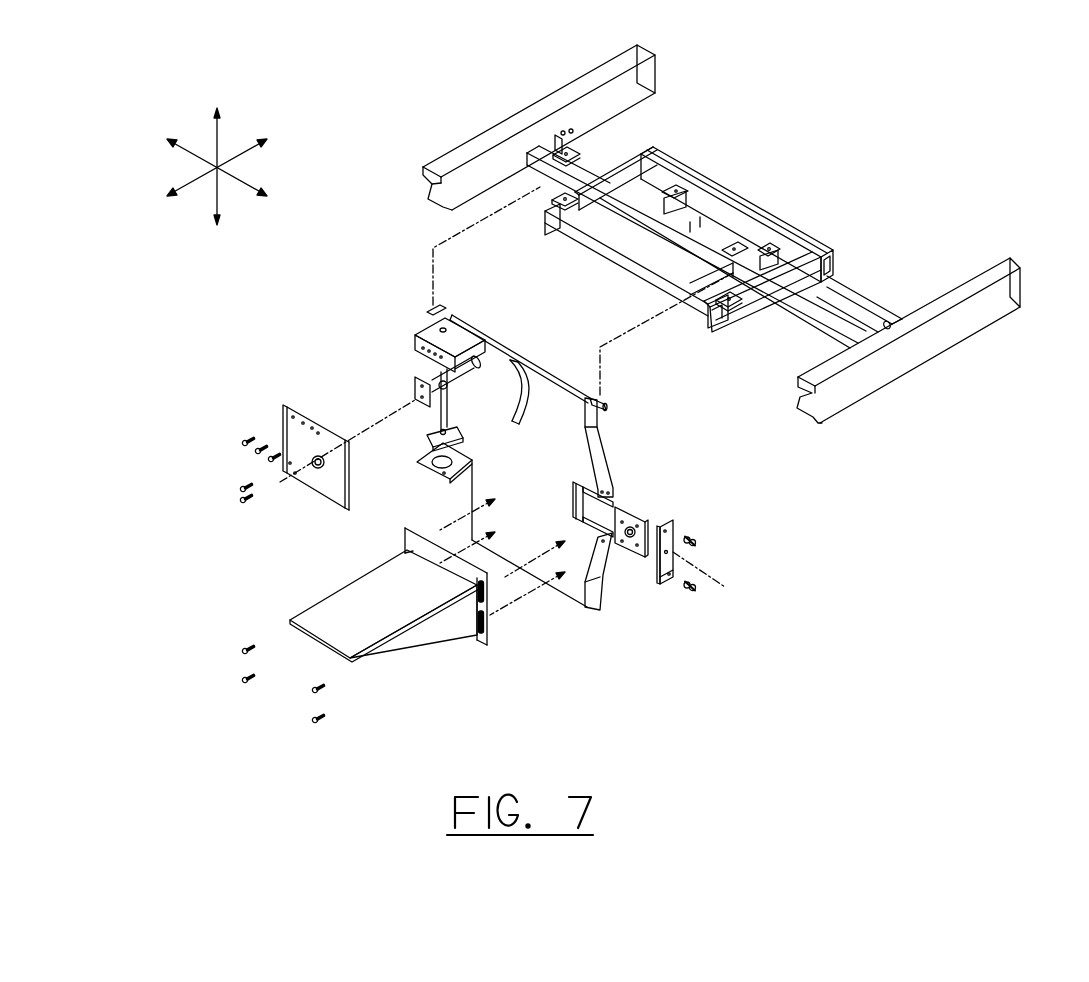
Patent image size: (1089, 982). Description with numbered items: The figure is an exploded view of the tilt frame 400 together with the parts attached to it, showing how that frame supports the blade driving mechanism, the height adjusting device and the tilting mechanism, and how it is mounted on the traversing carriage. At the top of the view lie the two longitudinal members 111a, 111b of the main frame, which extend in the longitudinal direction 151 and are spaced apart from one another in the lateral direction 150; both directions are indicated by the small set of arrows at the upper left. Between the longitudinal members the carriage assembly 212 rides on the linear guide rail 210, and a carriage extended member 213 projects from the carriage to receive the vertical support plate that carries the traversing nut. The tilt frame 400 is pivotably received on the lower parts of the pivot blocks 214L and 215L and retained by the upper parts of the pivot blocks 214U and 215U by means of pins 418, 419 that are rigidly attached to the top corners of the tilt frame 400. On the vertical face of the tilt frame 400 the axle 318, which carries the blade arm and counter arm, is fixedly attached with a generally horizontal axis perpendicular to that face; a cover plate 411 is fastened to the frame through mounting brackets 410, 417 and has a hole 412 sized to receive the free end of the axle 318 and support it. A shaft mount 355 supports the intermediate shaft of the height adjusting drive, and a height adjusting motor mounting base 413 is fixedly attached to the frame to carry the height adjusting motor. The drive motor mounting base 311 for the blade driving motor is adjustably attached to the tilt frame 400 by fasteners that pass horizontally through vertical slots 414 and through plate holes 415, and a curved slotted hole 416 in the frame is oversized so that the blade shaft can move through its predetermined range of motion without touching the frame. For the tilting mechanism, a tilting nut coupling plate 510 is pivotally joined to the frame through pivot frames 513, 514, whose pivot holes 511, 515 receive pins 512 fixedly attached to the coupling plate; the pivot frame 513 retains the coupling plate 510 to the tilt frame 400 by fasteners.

The longitudinal member 111a is at (537, 107).
The longitudinal member 111b is at (903, 360).
The lateral direction 150 is at (247, 181).
The longitudinal direction 151 is at (250, 148).
The linear guide rail 210 is at (845, 293).
The carriage assembly 212 is at (700, 152).
The carriage extended member 213 is at (742, 323).
The upper part of pivot block 214U is at (557, 152).
The lower part of pivot block 214L is at (570, 230).
The upper part of pivot block 215U is at (760, 243).
The lower part of pivot block 215L is at (742, 316).
The drive motor mounting base 311 is at (360, 603).
The axle 318 is at (437, 367).
The shaft mount 355 is at (430, 435).
The tilt frame 400 is at (463, 323).
The mounting bracket 410 is at (437, 335).
The cover plate 411 is at (295, 442).
The hole 412 is at (313, 470).
The height adjusting motor mounting base 413 is at (430, 473).
The vertical slots 414 is at (472, 638).
The plate holes 415 is at (548, 600).
The curved slotted hole 416 is at (527, 363).
The mounting bracket 417 is at (417, 392).
The pin 418 is at (442, 312).
The pin 419 is at (603, 407).
The tilting nut coupling plate 510 is at (635, 508).
The pivot hole 511 is at (593, 503).
The pins 512 is at (667, 522).
The pivot frame 513 is at (667, 580).
The pivot frame 514 is at (614, 545).
The pivot hole 515 is at (692, 553).